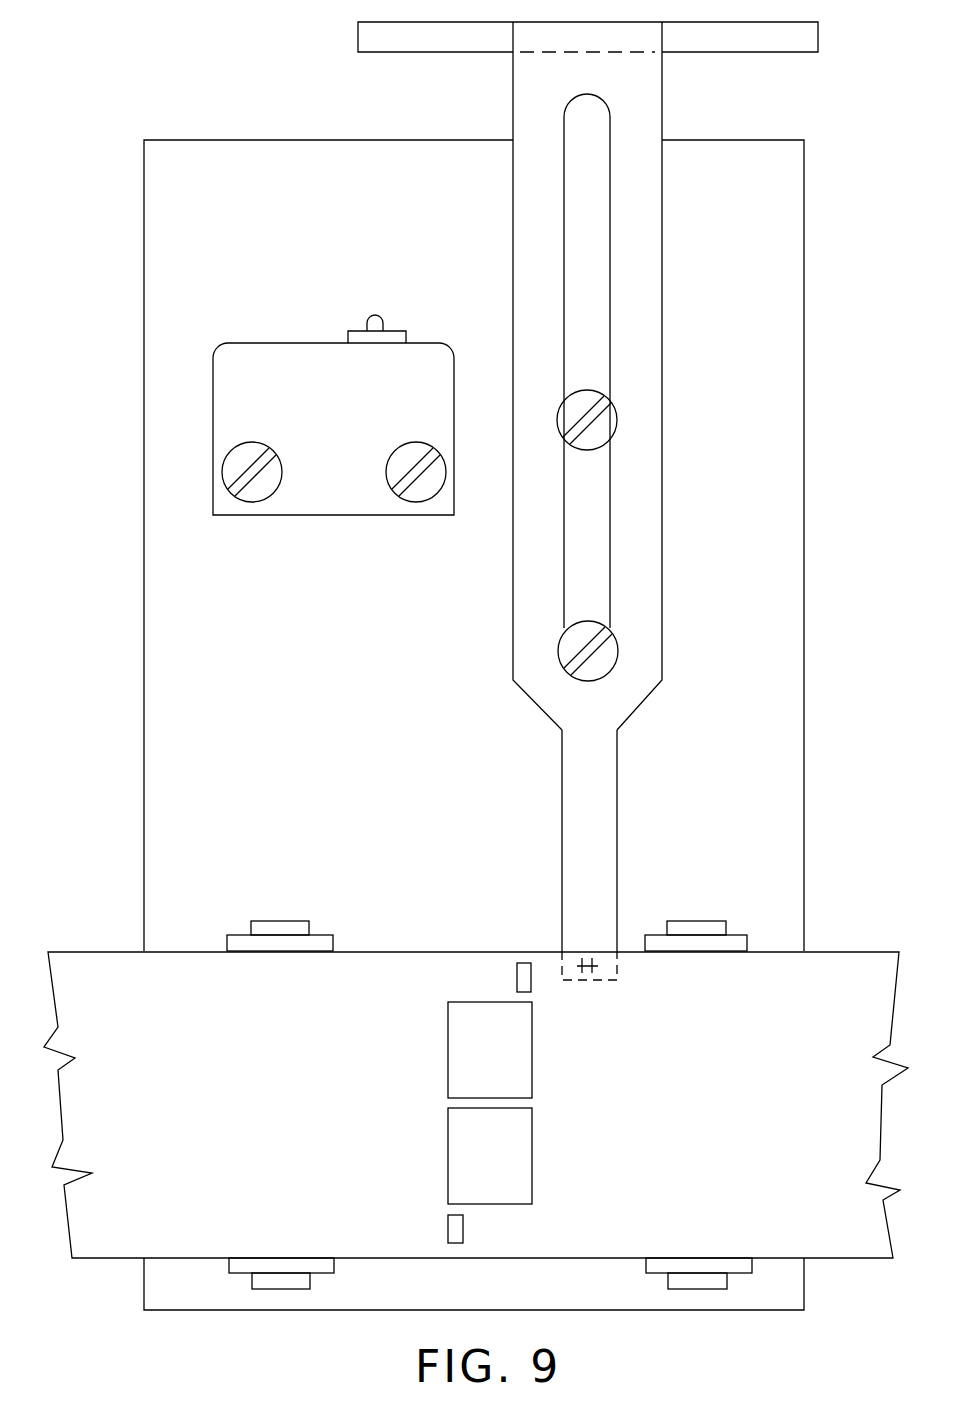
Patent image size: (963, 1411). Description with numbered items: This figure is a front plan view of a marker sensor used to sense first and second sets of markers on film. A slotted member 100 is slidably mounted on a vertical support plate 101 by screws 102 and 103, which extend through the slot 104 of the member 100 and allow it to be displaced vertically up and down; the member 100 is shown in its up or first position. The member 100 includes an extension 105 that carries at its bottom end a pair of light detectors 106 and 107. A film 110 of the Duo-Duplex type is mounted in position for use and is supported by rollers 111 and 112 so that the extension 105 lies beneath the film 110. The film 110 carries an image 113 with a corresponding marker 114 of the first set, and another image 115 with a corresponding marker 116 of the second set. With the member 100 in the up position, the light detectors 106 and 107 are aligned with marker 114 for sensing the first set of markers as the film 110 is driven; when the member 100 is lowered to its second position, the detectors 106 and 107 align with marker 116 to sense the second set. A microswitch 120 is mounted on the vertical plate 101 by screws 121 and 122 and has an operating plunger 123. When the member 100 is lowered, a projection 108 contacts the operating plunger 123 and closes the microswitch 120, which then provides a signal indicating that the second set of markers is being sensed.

The slotted member 100 is at (647, 437).
The vertical support plate 101 is at (360, 722).
The screw 102 is at (592, 443).
The screw 103 is at (589, 634).
The slot 104 is at (593, 277).
The extension 105 is at (600, 815).
The light detector 106 is at (576, 965).
The light detector 107 is at (597, 963).
The projection 108 is at (421, 42).
The film 110 is at (382, 980).
The roller 111 is at (230, 942).
The roller 112 is at (748, 946).
The image 113 is at (451, 1069).
The marker 114 is at (517, 975).
The image 115 is at (460, 1175).
The marker 116 is at (452, 1232).
The microswitch 120 is at (283, 357).
The screw 121 is at (258, 493).
The screw 122 is at (422, 496).
The operating plunger 123 is at (383, 318).